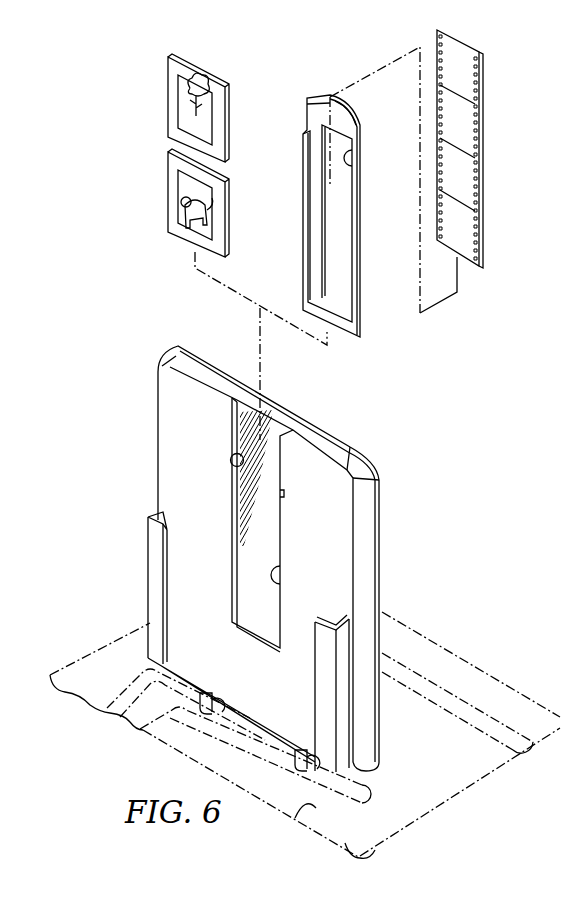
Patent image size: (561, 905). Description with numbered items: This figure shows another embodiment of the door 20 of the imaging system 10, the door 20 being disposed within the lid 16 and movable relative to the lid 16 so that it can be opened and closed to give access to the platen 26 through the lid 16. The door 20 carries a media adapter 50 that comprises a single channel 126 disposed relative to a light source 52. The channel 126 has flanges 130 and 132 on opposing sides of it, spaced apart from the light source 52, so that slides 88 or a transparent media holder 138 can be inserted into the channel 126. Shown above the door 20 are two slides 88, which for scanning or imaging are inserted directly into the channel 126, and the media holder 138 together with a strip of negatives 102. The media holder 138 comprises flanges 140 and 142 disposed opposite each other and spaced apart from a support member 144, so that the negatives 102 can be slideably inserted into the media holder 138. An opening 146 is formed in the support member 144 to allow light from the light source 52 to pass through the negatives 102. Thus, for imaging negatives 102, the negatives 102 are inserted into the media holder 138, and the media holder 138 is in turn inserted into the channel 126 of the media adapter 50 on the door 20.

The imaging system 10 is at (492, 652).
The lid 16 is at (443, 762).
The door 20 is at (388, 487).
The platen 26 is at (316, 808).
The media adapter 50 is at (290, 510).
The light source 52 is at (251, 598).
The slides 88 is at (167, 97).
The negatives 102 is at (481, 78).
The channel 126 is at (277, 430).
The flange 130 is at (287, 576).
The flange 132 is at (231, 460).
The transparent media holder 138 is at (303, 214).
The flange 140 is at (345, 158).
The flange 142 is at (305, 120).
The support member 144 is at (315, 108).
The opening 146 is at (346, 124).